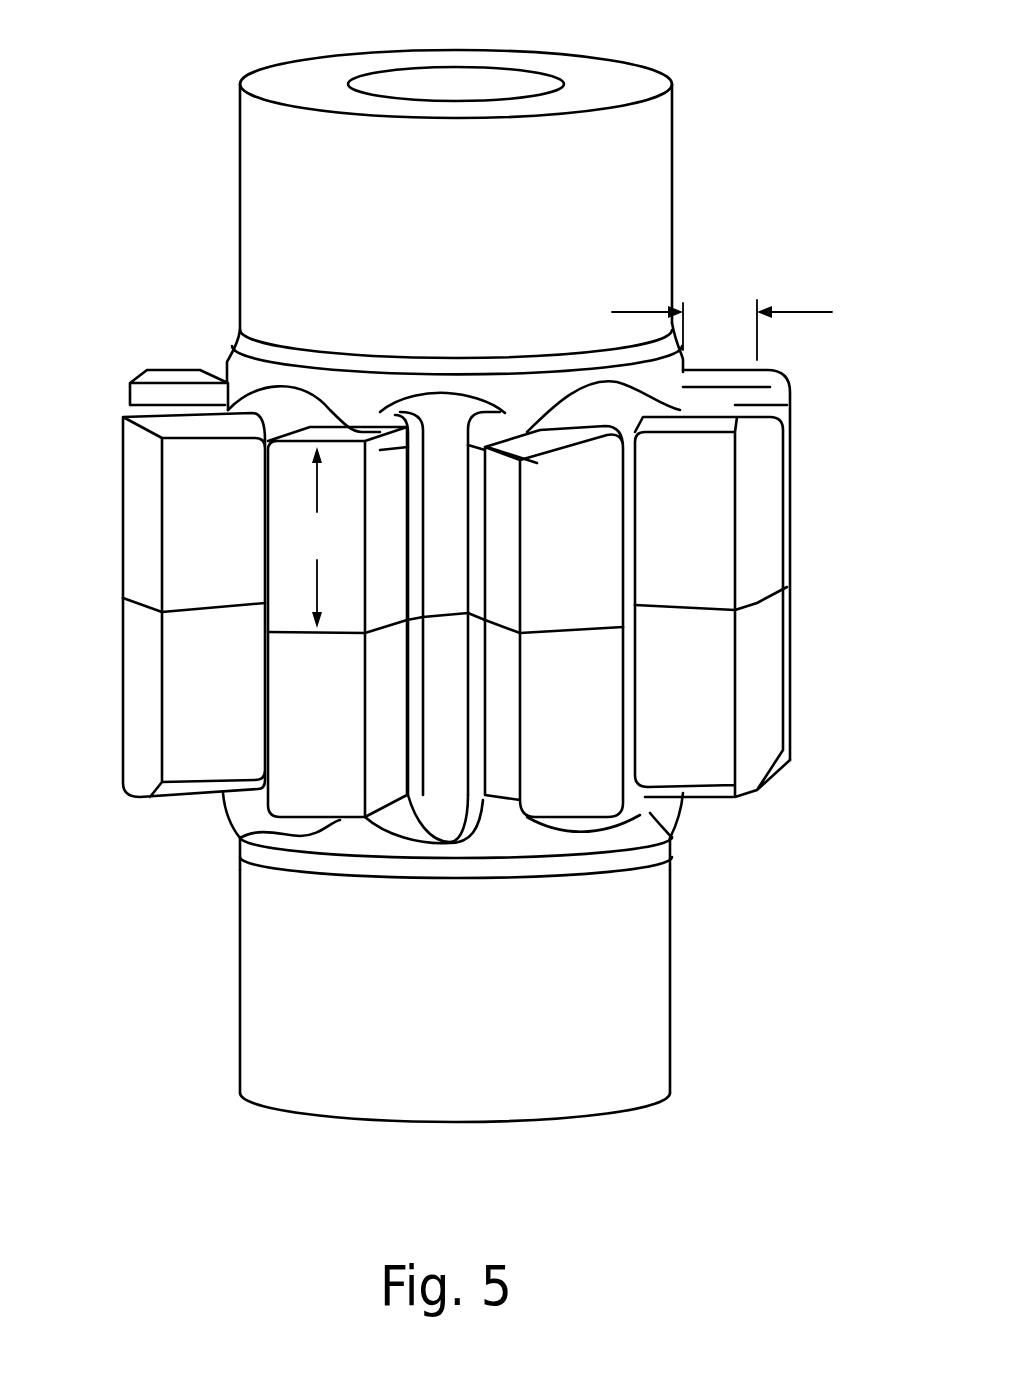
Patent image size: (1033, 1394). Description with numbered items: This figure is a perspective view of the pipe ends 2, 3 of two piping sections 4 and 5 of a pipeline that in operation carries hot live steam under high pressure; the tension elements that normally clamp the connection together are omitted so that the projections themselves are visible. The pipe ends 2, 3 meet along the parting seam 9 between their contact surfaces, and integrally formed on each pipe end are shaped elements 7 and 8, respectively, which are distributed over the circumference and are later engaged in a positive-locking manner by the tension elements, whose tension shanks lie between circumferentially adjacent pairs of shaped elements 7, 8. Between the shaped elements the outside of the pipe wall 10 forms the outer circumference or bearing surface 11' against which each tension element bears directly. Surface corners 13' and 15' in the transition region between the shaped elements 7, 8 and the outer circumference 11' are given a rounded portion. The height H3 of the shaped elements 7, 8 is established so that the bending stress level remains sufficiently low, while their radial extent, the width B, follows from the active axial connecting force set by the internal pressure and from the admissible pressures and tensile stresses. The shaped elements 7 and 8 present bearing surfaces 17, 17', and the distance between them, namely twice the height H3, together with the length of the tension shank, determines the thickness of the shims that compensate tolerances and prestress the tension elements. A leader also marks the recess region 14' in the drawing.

The pipe end 2 is at (610, 182).
The pipe end 3 is at (632, 1025).
The piping section 4 is at (611, 58).
The piping section 5 is at (624, 1118).
The shaped element 7 is at (143, 503).
The shaped element 8 is at (143, 673).
The parting seam 9 is at (757, 603).
The pipe wall 10 is at (607, 935).
The bearing surface 11' is at (416, 673).
The surface corner 13' is at (543, 509).
The upper recess 14' is at (454, 350).
The surface corner 15' is at (424, 877).
The bearing surface 17 is at (517, 560).
The bearing surface 17' is at (565, 822).
The width B is at (722, 327).
The height H3 is at (319, 537).